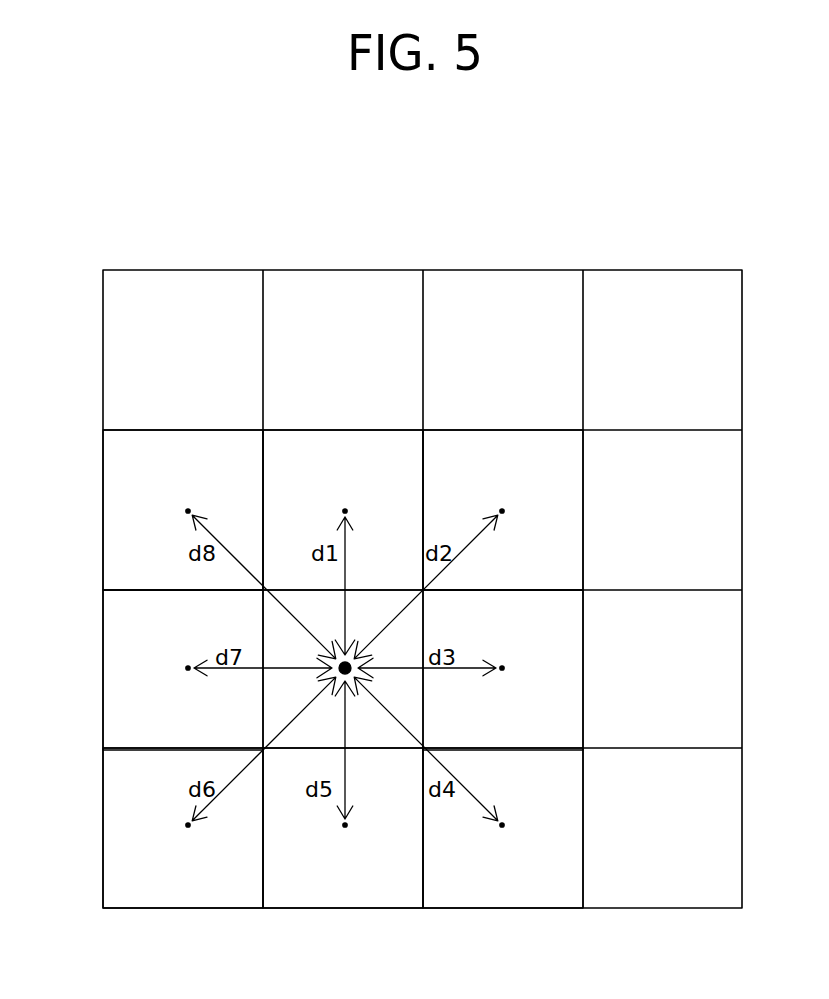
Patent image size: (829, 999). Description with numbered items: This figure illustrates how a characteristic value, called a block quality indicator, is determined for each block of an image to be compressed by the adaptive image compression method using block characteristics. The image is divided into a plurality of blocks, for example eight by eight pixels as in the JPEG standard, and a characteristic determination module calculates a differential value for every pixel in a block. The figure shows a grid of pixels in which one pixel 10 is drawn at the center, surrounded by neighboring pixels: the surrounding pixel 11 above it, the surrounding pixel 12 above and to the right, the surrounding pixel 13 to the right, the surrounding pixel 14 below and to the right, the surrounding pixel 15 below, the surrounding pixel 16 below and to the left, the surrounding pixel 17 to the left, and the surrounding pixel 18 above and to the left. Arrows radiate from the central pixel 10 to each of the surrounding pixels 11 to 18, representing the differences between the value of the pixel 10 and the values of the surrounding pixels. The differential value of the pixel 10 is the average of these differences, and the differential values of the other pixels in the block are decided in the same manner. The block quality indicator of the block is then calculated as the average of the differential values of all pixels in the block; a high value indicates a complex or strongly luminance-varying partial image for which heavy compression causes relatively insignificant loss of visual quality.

The pixel 10 is at (334, 663).
The surrounding pixel 11 is at (339, 455).
The surrounding pixel 12 is at (489, 457).
The surrounding pixel 13 is at (554, 674).
The surrounding pixel 14 is at (490, 880).
The surrounding pixel 15 is at (340, 880).
The surrounding pixel 16 is at (181, 880).
The surrounding pixel 17 is at (138, 680).
The surrounding pixel 18 is at (179, 455).